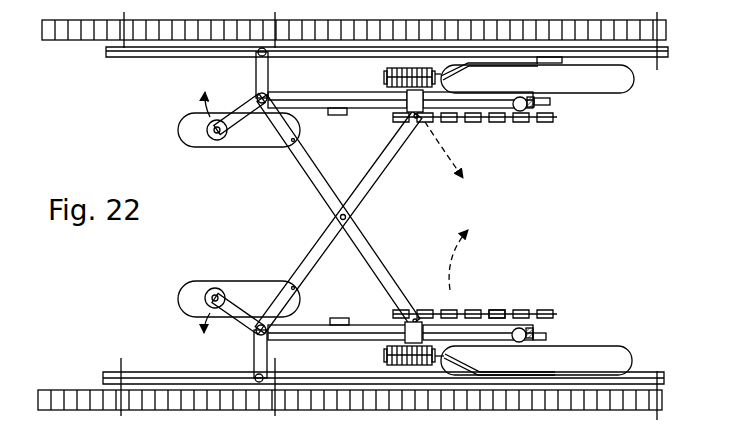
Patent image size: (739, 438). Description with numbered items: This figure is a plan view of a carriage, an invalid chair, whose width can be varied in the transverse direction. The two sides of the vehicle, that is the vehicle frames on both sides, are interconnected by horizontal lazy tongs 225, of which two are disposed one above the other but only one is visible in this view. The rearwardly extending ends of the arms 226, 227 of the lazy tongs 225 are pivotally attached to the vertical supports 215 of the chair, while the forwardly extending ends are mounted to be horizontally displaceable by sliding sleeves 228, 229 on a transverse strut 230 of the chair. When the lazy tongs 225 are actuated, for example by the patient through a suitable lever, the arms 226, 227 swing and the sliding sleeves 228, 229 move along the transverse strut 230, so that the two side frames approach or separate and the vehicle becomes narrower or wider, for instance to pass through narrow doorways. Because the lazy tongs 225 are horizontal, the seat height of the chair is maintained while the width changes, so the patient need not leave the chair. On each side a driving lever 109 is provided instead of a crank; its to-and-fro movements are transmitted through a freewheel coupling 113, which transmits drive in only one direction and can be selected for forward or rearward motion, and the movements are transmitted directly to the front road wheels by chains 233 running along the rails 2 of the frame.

The rail 2 is at (173, 28).
The driving lever 109 is at (545, 63).
The freewheel coupling 113 is at (405, 356).
The vertical support 215 is at (260, 107).
The horizontal lazy tongs 225 is at (376, 240).
The arm of the lazy tongs 226 is at (374, 177).
The arm of the lazy tongs 227 is at (312, 167).
The sliding sleeve 228 is at (423, 105).
The sliding sleeve 229 is at (434, 311).
The transverse strut 230 is at (497, 100).
The chain 233 is at (495, 311).